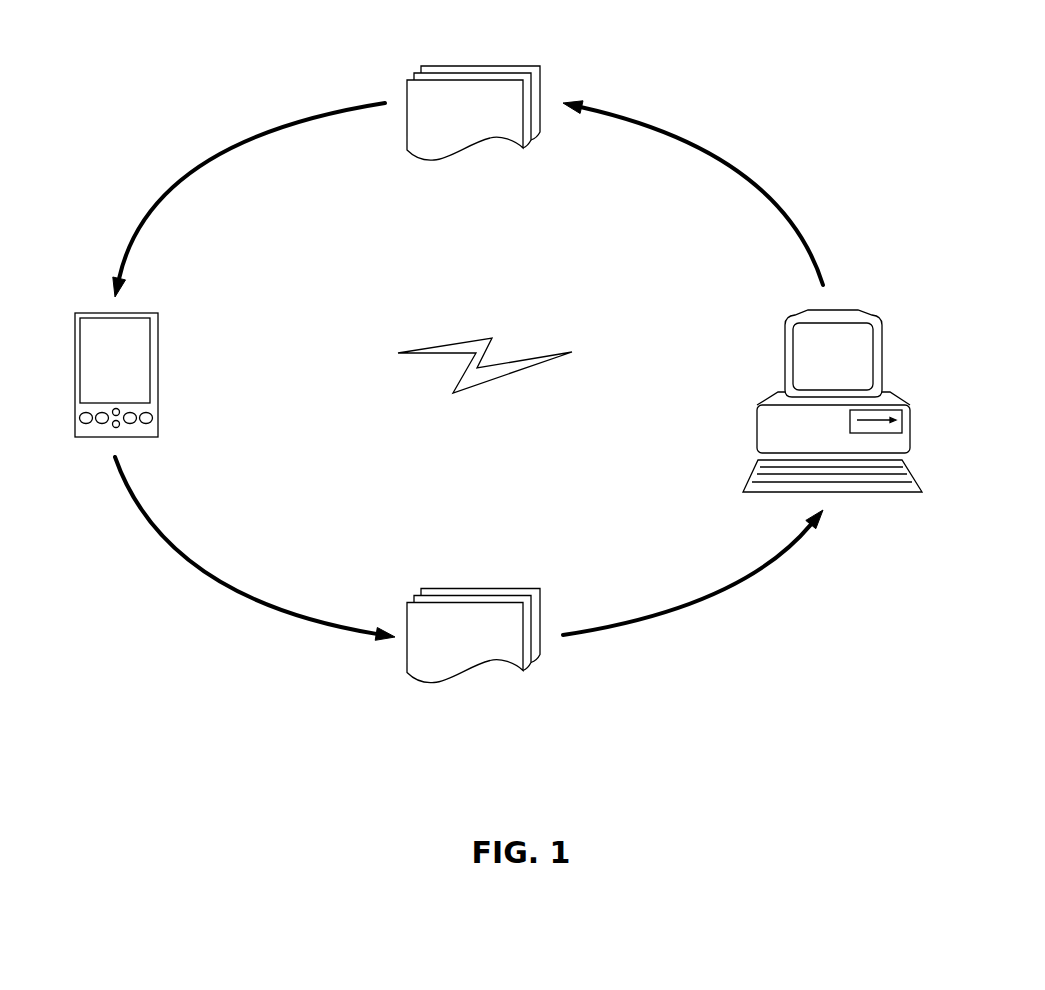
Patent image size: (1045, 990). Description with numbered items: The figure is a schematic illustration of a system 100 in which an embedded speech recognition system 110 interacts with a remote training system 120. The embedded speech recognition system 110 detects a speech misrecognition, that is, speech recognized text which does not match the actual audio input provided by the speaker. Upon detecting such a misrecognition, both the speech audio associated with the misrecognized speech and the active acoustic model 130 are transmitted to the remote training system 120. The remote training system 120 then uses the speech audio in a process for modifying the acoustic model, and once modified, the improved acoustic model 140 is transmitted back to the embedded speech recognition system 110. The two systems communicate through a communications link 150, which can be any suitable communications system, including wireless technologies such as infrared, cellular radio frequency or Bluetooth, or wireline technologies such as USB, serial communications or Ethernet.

The system 100 is at (817, 68).
The embedded speech recognition system 110 is at (73, 377).
The remote training system 120 is at (756, 430).
The active acoustic model 130 is at (473, 669).
The improved acoustic model 140 is at (473, 64).
The communications link 150 is at (462, 340).